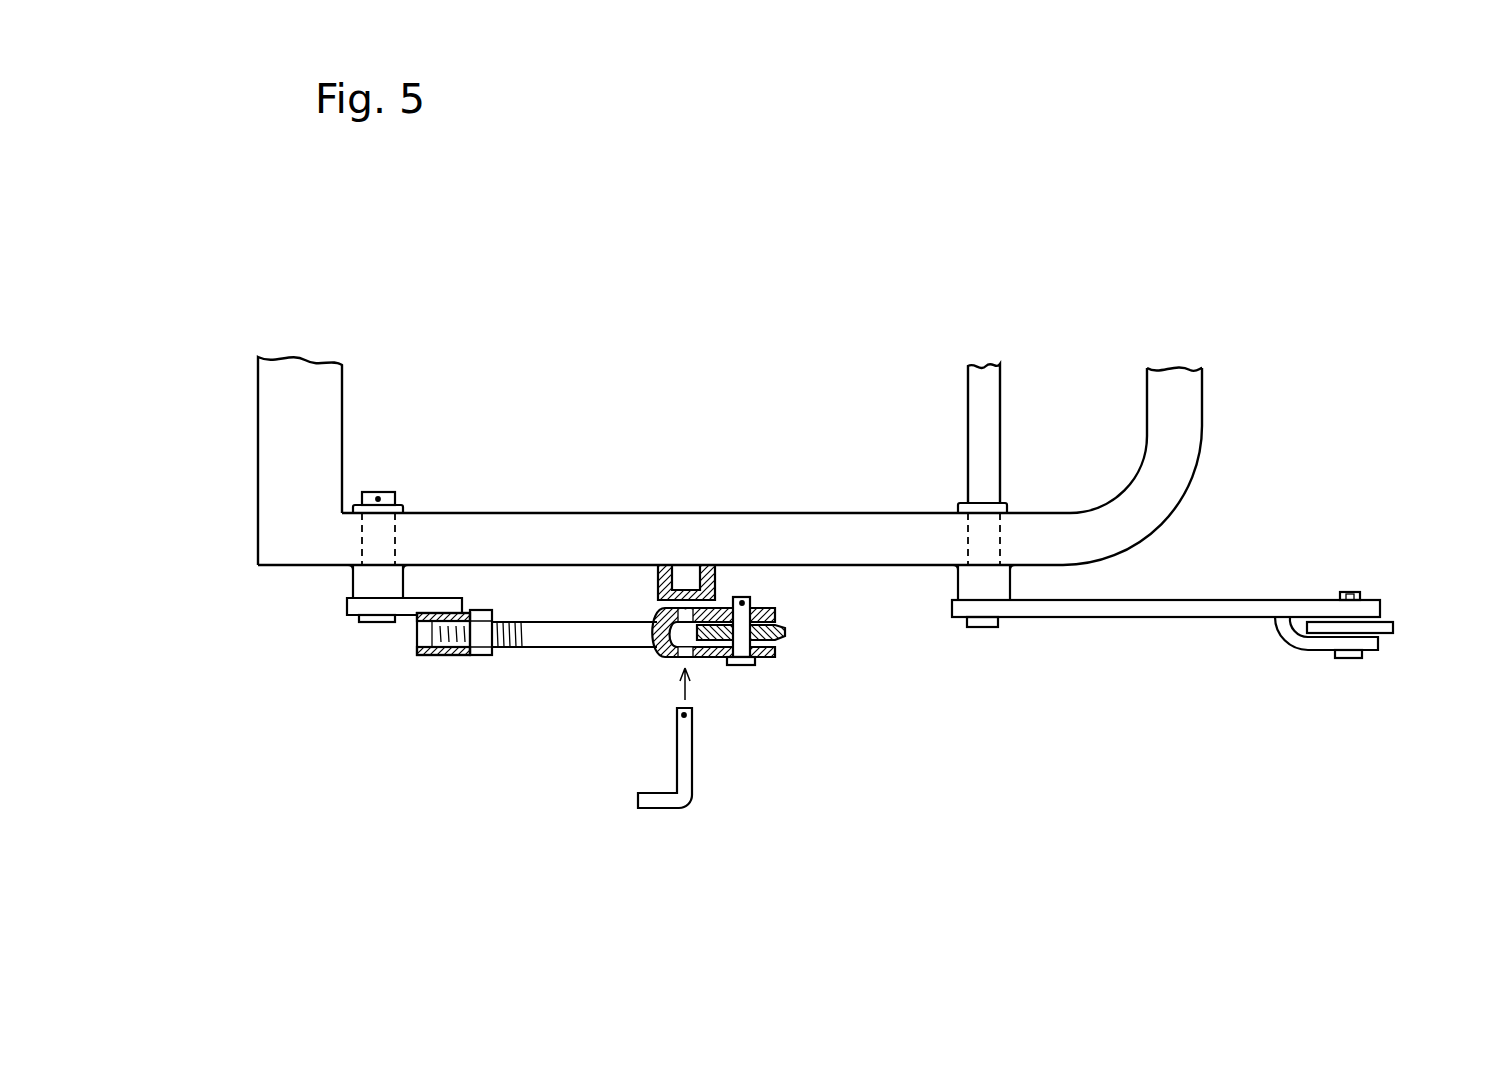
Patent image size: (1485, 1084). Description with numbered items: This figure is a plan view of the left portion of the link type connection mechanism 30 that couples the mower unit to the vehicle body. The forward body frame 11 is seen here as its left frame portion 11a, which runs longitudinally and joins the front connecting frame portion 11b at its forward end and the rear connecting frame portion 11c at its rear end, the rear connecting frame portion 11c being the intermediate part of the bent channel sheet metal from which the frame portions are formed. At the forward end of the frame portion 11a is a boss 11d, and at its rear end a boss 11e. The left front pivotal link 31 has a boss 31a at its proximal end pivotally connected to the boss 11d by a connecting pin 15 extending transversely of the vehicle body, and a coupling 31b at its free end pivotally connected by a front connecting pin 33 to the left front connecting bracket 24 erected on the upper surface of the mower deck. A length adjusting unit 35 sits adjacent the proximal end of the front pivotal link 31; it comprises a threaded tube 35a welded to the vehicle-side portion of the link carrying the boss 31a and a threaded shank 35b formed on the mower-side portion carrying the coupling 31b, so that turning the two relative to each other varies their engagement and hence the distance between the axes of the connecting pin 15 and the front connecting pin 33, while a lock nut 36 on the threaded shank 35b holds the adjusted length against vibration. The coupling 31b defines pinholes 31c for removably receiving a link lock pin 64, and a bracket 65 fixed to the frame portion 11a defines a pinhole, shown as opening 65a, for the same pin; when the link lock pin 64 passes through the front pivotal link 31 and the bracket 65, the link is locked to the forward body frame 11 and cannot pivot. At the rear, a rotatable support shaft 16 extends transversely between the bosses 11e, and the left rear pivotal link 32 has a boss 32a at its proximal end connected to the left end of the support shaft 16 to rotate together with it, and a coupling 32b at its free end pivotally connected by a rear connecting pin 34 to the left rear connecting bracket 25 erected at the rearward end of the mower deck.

The forward body frame 11 is at (745, 508).
The frame portion 11a is at (785, 518).
The front connecting frame portion 11b is at (268, 400).
The rear connecting frame portion 11c is at (1195, 395).
The boss 11d is at (403, 506).
The boss 11e is at (1007, 505).
The connecting pin 15 is at (365, 622).
The rotatable support shaft 16 is at (975, 398).
The front connecting bracket 24 is at (785, 632).
The rear connecting bracket 25 is at (1393, 628).
The link type connection mechanism 30 is at (851, 688).
The front pivotal link 31 is at (534, 680).
The boss 31a is at (349, 590).
The coupling 31b is at (765, 657).
The pinhole 31c is at (683, 658).
The rear pivotal link 32 is at (1201, 624).
The boss 32a is at (1000, 590).
The coupling 32b is at (1322, 650).
The front connecting pin 33 is at (743, 597).
The rear connecting pin 34 is at (1350, 590).
The length adjusting unit 35 is at (477, 706).
The threaded tube 35a is at (452, 655).
The threaded shank 35b is at (510, 648).
The lock nut 36 is at (487, 612).
The link lock pin 64 is at (688, 778).
The bracket 65 is at (658, 585).
The bracket opening 65a is at (690, 590).